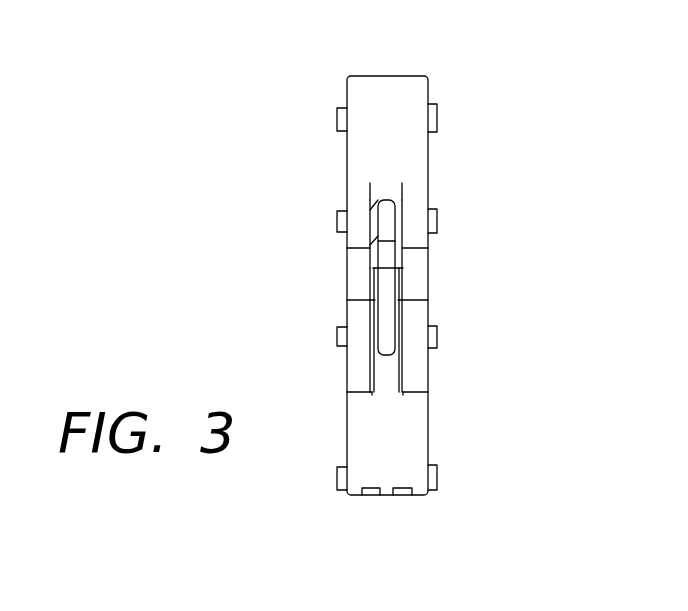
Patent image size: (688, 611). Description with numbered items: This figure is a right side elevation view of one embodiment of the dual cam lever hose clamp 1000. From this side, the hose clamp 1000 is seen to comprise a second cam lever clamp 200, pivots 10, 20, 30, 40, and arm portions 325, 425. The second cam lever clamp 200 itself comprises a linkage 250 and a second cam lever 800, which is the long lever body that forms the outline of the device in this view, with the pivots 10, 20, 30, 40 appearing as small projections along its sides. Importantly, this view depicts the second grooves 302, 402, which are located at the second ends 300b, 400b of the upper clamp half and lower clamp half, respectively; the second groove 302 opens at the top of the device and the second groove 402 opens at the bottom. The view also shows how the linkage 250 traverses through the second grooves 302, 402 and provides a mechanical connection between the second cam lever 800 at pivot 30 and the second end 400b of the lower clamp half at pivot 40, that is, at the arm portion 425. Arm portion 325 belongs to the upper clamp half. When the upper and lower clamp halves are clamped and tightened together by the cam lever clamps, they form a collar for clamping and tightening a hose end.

The dual cam lever hose clamp 1000 is at (266, 89).
The second cam lever clamp 200 is at (440, 171).
The pivot 10 is at (437, 127).
The pivot 20 is at (437, 483).
The pivot 30 is at (437, 228).
The pivot 40 is at (438, 339).
The second cam lever 800 is at (363, 156).
The second groove 302 is at (388, 177).
The second end of the upper clamp half 300b is at (360, 265).
The linkage 250 is at (383, 310).
The arm portion 325 is at (432, 272).
The second end of the lower clamp half 400b is at (360, 360).
The arm portion 425 is at (420, 424).
The second groove 402 is at (381, 401).